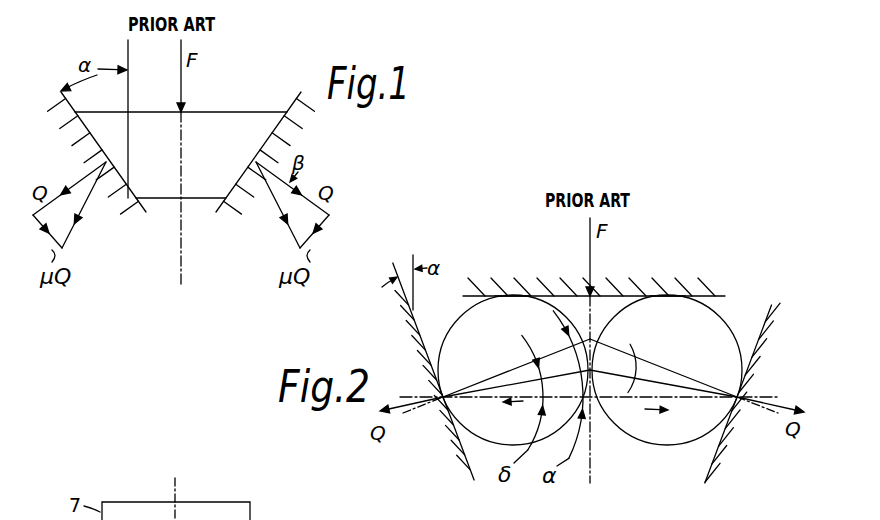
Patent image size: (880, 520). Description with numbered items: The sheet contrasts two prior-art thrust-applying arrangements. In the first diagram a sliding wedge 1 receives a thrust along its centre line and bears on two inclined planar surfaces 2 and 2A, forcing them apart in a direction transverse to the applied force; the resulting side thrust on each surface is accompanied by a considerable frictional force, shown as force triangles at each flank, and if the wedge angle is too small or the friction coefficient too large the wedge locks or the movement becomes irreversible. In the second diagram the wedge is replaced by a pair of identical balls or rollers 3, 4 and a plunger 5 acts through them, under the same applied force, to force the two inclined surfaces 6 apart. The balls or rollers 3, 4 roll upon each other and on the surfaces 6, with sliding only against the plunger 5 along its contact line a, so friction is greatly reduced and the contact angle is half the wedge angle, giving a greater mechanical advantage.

In FIG. 1, the wedge 1 is at (228, 118).
In FIG. 1, the inclined planar surface 2 is at (290, 127).
In FIG. 1, the inclined planar surface 2A is at (84, 145).
In FIG. 2, the ball or roller 3 is at (466, 327).
In FIG. 2, the ball or roller 4 is at (724, 330).
In FIG. 2, the plunger 5 is at (622, 296).
In FIG. 2, the inclined surfaces 6 is at (427, 355).
In FIG. 2, the contact line a is at (510, 296).